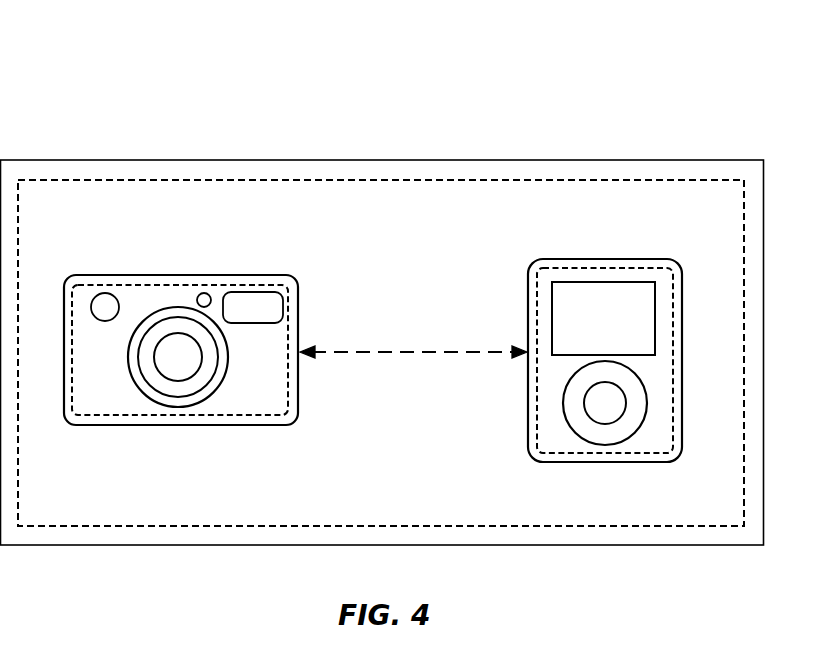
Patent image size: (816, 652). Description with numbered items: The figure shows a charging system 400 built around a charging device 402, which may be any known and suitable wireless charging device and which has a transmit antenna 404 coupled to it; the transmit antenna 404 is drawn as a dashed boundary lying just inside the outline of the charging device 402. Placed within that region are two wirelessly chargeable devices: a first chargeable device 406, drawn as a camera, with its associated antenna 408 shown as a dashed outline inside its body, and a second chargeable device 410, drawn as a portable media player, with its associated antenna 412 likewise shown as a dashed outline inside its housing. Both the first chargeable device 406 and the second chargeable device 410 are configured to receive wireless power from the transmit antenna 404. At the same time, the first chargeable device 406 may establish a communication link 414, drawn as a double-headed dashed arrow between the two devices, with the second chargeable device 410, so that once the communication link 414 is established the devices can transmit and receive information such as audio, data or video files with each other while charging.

The charging system 400 is at (97, 77).
The charging device 402 is at (606, 160).
The transmit antenna 404 is at (405, 180).
The first chargeable device 406 is at (272, 275).
The antenna 408 is at (237, 415).
The second chargeable device 410 is at (615, 259).
The antenna 412 is at (539, 428).
The communication link 414 is at (403, 353).